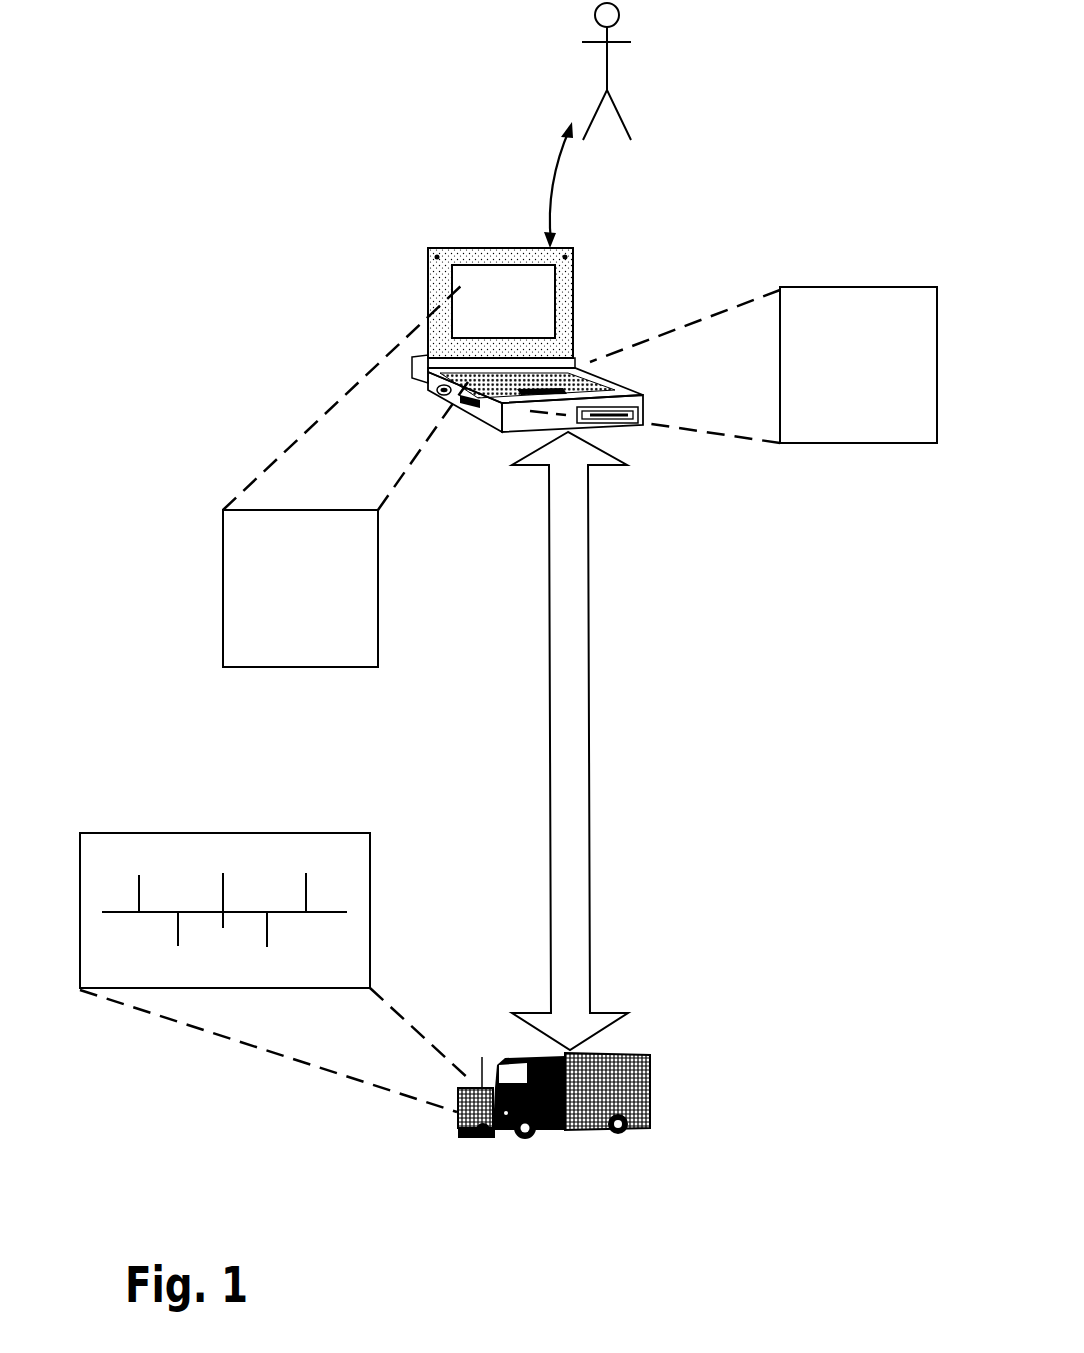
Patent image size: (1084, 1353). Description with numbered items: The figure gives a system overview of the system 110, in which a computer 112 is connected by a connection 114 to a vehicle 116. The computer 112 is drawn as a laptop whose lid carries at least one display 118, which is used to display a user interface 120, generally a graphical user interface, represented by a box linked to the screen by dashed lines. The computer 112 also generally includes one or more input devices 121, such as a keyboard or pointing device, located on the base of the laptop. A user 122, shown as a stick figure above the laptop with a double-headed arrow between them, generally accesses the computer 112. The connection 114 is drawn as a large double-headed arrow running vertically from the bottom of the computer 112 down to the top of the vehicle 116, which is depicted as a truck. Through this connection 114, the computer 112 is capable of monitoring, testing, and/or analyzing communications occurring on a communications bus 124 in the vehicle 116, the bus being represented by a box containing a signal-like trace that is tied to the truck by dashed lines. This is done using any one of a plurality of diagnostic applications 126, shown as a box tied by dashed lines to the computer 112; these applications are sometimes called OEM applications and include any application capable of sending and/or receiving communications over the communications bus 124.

The system 110 is at (773, 198).
The computer 112 is at (551, 322).
The connection 114 is at (580, 741).
The vehicle 116 is at (554, 1115).
The display 118 is at (503, 301).
The user interface 120 is at (345, 475).
The input devices 121 is at (531, 394).
The user 122 is at (587, 125).
The communications bus 124 is at (275, 972).
The diagnostic applications 126 is at (763, 365).